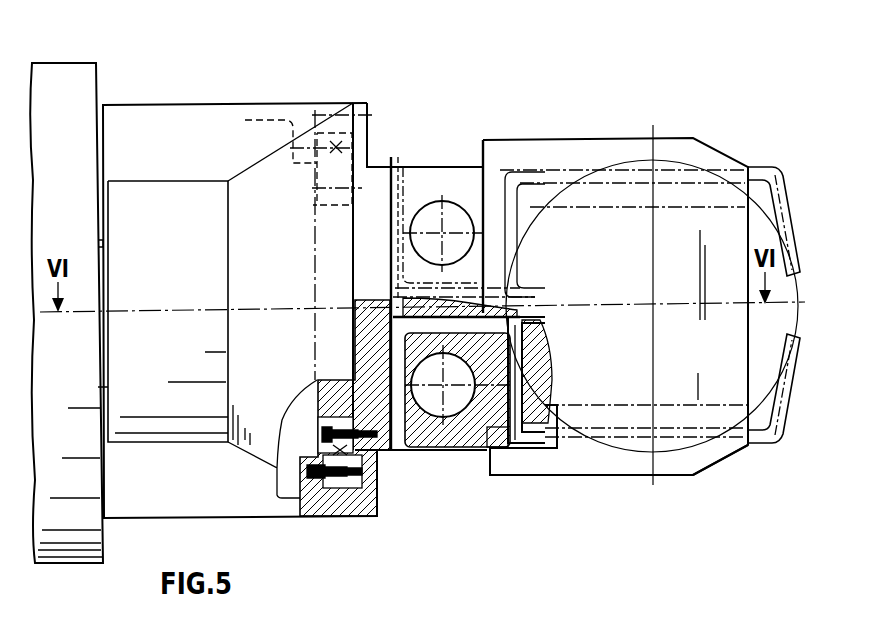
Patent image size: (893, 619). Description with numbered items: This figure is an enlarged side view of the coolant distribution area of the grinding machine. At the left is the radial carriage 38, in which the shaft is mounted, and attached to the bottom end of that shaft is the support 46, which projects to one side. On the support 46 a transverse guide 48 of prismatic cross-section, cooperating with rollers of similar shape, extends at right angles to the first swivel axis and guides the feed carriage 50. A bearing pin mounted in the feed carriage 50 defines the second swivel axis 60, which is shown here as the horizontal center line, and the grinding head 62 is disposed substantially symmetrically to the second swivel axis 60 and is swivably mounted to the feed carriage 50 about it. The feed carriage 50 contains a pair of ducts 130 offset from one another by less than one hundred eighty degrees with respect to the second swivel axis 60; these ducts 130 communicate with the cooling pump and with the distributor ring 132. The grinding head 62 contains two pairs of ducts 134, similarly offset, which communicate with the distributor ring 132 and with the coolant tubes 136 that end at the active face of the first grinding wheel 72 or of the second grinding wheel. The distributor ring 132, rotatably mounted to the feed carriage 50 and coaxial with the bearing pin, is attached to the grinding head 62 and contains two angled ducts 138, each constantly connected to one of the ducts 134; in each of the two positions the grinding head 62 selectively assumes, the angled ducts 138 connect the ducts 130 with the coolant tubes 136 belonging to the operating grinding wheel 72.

The radial carriage 38 is at (66, 75).
The support 46 is at (181, 125).
The transverse guide 48 is at (352, 152).
The feed carriage 50 is at (442, 452).
The second swivel axis 60 is at (159, 313).
The grinding head 62 is at (593, 462).
The first grinding wheel 72 is at (750, 430).
The ducts 130 is at (528, 233).
The distributor ring 132 is at (500, 448).
The ducts 134 is at (575, 170).
The coolant tube 136 is at (771, 165).
The angled ducts 138 is at (528, 175).